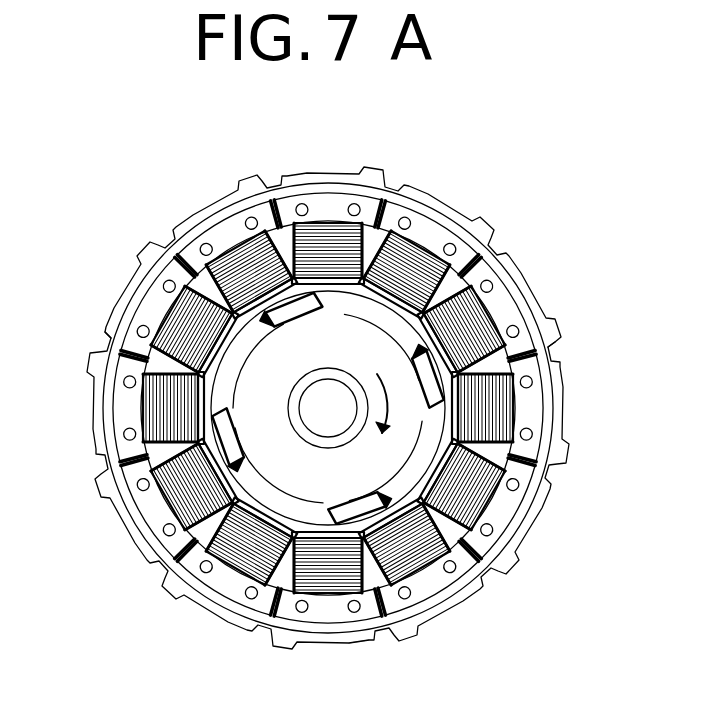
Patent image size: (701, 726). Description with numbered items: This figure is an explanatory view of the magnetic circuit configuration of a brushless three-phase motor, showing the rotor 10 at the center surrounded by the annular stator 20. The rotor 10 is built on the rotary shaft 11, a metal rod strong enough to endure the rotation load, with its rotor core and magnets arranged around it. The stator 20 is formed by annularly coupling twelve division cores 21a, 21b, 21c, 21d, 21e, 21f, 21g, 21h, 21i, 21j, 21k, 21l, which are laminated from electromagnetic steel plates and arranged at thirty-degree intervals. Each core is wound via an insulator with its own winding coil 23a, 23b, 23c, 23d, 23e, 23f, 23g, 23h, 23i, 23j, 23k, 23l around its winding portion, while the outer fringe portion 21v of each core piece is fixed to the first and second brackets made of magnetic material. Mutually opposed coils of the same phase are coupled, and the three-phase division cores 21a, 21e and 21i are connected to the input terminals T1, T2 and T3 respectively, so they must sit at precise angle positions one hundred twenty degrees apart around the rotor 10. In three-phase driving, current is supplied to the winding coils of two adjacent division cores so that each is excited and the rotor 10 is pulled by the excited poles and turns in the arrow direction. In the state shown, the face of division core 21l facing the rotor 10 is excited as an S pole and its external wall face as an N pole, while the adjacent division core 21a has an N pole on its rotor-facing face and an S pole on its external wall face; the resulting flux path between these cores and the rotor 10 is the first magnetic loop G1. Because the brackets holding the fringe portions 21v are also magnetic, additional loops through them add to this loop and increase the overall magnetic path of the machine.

The rotor 10 is at (375, 365).
The rotary shaft 11 is at (337, 433).
The stator 20 is at (232, 162).
The division core 21a is at (350, 625).
The division core 21b is at (228, 612).
The division core 21c is at (140, 520).
The division core 21d is at (110, 400).
The division core 21e is at (130, 300).
The division core 21f is at (205, 240).
The division core 21g is at (299, 195).
The division core 21h is at (430, 205).
The division core 21i is at (510, 265).
The division core 21j is at (550, 380).
The division core 21k is at (540, 520).
The division core 21l is at (470, 600).
The fringe portion 21v is at (400, 650).
The winding coil 23a is at (332, 595).
The winding coil 23b is at (236, 575).
The winding coil 23c is at (168, 508).
The winding coil 23d is at (145, 418).
The winding coil 23e is at (165, 322).
The winding coil 23f is at (240, 258).
The winding coil 23g is at (335, 226).
The winding coil 23h is at (430, 255).
The winding coil 23i is at (490, 320).
The winding coil 23j is at (515, 400).
The winding coil 23k is at (492, 515).
The winding coil 23l is at (430, 575).
The first magnetic loop G1 is at (309, 407).
The input terminal T1 is at (292, 632).
The input terminal T2 is at (112, 300).
The input terminal T3 is at (552, 330).